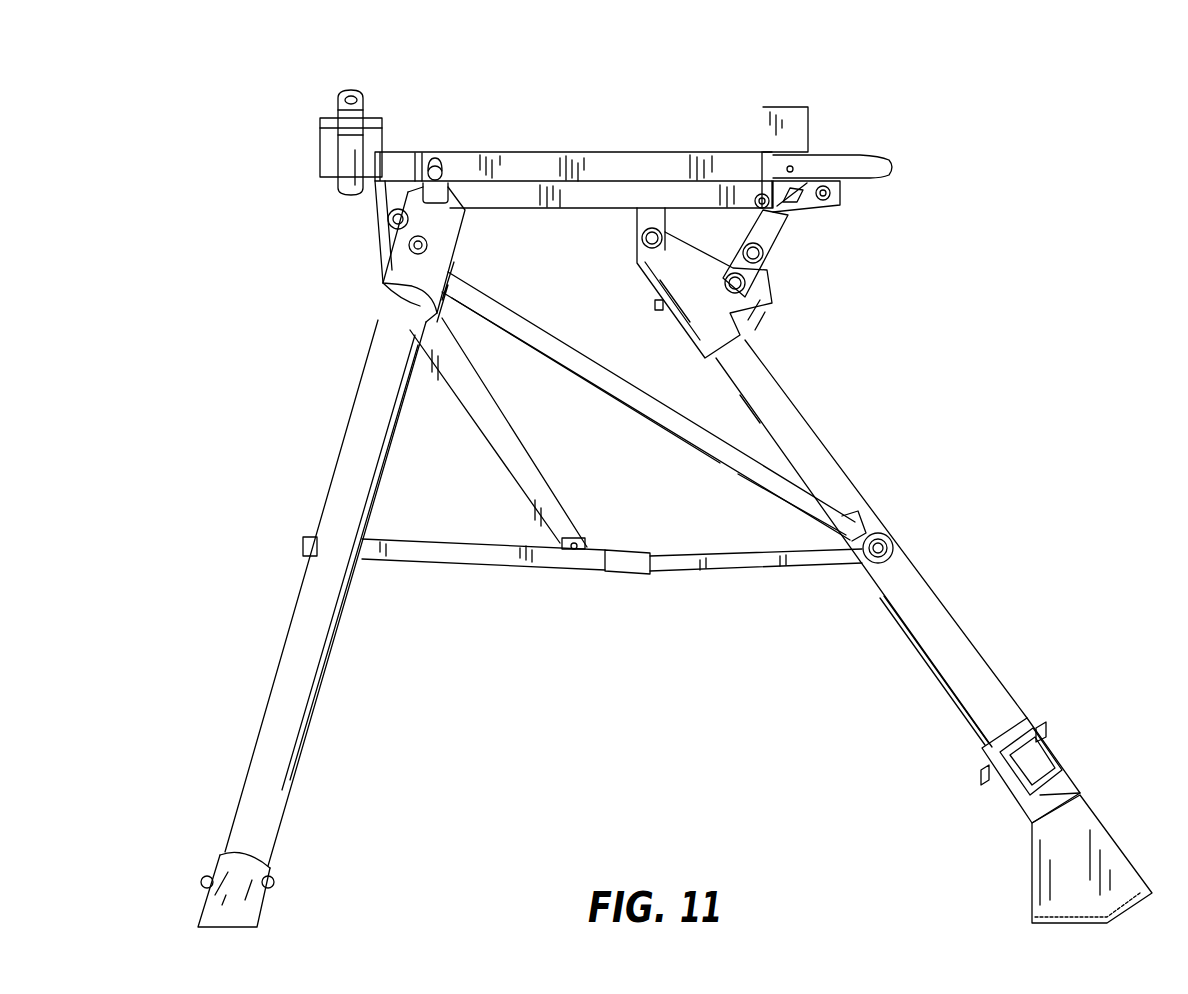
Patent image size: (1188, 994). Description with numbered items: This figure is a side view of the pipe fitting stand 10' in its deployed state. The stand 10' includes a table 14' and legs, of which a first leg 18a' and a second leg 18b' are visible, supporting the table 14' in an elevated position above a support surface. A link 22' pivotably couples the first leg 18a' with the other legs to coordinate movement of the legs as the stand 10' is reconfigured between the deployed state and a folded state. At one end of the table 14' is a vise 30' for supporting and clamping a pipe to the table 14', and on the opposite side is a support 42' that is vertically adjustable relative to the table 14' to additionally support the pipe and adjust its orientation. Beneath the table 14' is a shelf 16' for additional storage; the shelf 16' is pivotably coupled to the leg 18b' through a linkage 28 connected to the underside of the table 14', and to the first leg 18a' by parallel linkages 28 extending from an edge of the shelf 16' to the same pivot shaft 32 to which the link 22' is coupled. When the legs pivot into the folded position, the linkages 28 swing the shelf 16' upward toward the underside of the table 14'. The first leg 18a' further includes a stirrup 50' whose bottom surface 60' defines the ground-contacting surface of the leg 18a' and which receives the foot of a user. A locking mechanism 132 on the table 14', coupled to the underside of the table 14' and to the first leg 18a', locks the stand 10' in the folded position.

The pipe fitting stand 10' is at (461, 54).
The table 14' is at (633, 155).
The shelf 16' is at (476, 588).
The first leg 18a' is at (898, 581).
The leg 18b' is at (324, 554).
The link 22' is at (654, 406).
The linkage 28 is at (490, 418).
The vise 30' is at (312, 132).
The pivot shaft 32 is at (878, 565).
The support 42' is at (817, 107).
The stirrup 50' is at (1054, 859).
The bottom surface 60' is at (1049, 922).
The locking mechanism 132 is at (816, 262).